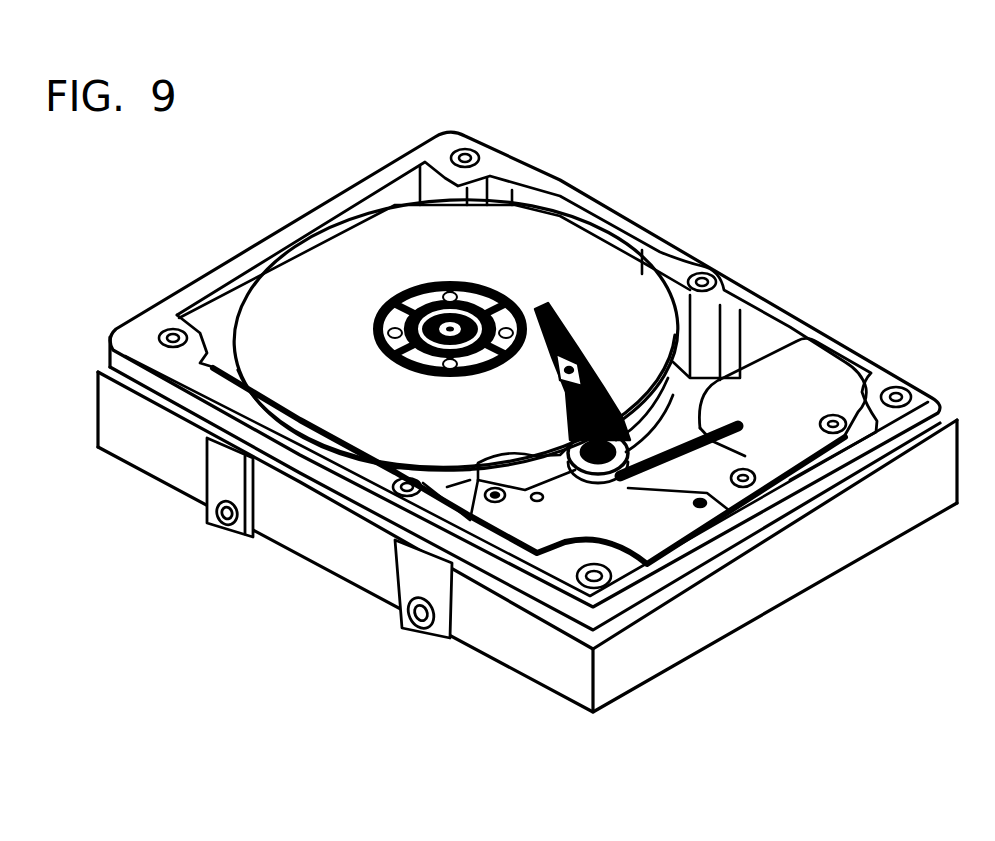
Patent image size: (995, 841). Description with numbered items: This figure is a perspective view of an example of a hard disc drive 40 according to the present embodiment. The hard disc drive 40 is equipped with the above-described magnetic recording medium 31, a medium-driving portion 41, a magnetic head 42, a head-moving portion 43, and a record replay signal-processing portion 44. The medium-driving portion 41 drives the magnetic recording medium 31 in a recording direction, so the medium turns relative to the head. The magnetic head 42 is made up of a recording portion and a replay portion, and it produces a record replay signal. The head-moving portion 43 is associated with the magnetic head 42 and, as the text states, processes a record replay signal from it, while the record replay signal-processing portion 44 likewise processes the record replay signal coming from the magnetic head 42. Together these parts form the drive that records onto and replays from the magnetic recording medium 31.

The hard disc drive 40 is at (784, 172).
The magnetic recording medium 31 is at (517, 258).
The medium-driving portion 41 is at (385, 300).
The magnetic head 42 is at (537, 310).
The head-moving portion 43 is at (807, 392).
The record replay signal-processing portion 44 is at (627, 468).